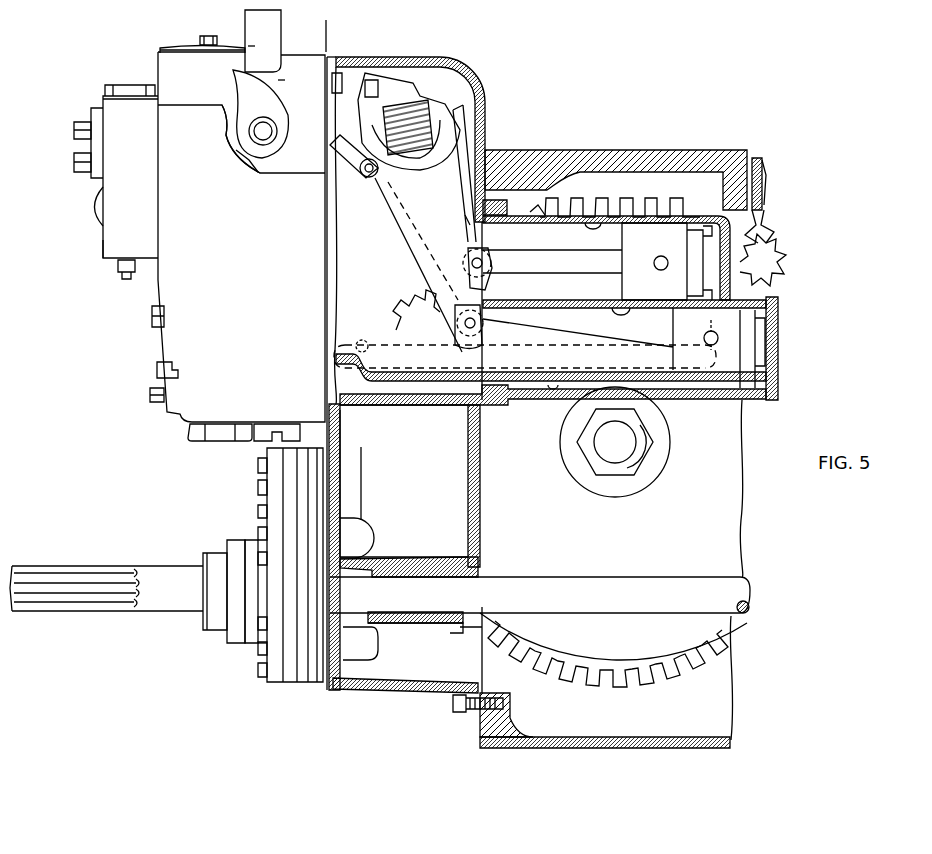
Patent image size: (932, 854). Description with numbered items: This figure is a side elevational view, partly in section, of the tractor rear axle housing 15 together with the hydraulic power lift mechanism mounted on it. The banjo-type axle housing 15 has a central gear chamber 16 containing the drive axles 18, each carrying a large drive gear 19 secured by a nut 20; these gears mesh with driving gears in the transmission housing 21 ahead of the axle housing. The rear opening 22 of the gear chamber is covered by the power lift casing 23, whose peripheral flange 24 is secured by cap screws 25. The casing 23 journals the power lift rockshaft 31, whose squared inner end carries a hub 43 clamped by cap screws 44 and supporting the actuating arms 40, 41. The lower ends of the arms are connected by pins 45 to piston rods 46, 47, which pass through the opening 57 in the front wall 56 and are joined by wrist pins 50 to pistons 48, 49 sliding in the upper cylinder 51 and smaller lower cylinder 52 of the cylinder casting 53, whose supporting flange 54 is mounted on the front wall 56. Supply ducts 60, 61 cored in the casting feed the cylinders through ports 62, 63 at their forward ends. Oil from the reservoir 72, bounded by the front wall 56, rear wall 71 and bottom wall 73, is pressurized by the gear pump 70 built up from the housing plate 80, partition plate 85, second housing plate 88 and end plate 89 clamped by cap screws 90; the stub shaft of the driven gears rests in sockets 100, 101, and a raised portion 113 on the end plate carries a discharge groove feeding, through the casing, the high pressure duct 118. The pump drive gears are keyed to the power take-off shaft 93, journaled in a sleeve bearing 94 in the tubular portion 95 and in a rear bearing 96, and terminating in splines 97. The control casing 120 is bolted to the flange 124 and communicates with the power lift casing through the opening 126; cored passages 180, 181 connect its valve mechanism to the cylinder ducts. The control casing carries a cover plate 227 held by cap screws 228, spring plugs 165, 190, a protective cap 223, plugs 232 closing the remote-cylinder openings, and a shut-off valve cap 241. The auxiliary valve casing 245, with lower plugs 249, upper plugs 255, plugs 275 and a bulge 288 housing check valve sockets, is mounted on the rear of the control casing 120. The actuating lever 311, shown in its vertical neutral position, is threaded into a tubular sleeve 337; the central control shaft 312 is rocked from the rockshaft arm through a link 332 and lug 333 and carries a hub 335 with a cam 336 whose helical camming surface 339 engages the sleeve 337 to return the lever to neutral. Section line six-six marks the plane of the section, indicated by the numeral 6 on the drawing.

The section line 6- 6 is at (297, 20).
The rear axle housing 15 is at (697, 142).
The gear chamber 16 is at (643, 736).
The drive axles 18 is at (628, 465).
The drive gear 19 is at (690, 676).
The nut 20 is at (640, 439).
The transmission housing 21 is at (757, 160).
The opening 22 is at (485, 677).
The power lift casing 23 is at (490, 515).
The flange 24 is at (476, 713).
The cap screws 25 is at (453, 707).
The power lift rockshaft 31 is at (470, 113).
The actuating arm 40 is at (484, 294).
The actuating arm 41 is at (418, 264).
The hub 43 is at (468, 134).
The cap screws 44 is at (378, 74).
The pins 45 is at (484, 258).
The piston rod 46 is at (540, 266).
The piston rod 47 is at (553, 324).
The piston 48 is at (665, 235).
The piston 49 is at (742, 323).
The wrist pins 50 is at (656, 268).
The cylinder 51 is at (590, 214).
The cylinder 52 is at (612, 303).
The cylinder casting 53 is at (766, 259).
The supporting flange 54 is at (507, 209).
The front wall 56 is at (480, 448).
The opening 57 is at (466, 222).
The supply duct 60 is at (527, 382).
The supply duct 61 is at (552, 393).
The port 62 is at (759, 263).
The port 63 is at (776, 389).
The pump 70 is at (272, 693).
The rear wall 71 is at (342, 501).
The reservoir 72 is at (424, 514).
The bottom wall 73 is at (400, 572).
The housing plate 80 is at (315, 683).
The partition plate 85 is at (305, 683).
The housing plate 88 is at (290, 683).
The end plate 89 is at (265, 646).
The cap screws 90 is at (257, 534).
The power take-off shaft 93 is at (528, 589).
The sleeve bearing 94 is at (398, 624).
The tubular portion 95 is at (436, 625).
The bearing 96 is at (208, 621).
The splines 97 is at (50, 587).
The socket 100 is at (366, 539).
The socket 101 is at (240, 533).
The raised portion 113 is at (252, 646).
The high pressure duct 118 is at (362, 463).
The control casing 120 is at (248, 250).
The flange 124 is at (348, 57).
The opening 126 is at (342, 93).
The plug 165 is at (198, 437).
The cored passage 180 is at (362, 339).
The cored passage 181 is at (422, 396).
The plug 190 is at (262, 437).
The threaded cap 223 is at (152, 322).
The cover plate 227 is at (180, 48).
The cap screws 228 is at (207, 36).
The plug 232 is at (150, 399).
The threaded cap 241 is at (157, 367).
The auxiliary valve casing 245 is at (95, 246).
The plugs 249 is at (122, 272).
The plugs 255 is at (125, 88).
The plugs 275 is at (74, 136).
The bulge 288 is at (90, 207).
The actuating lever 311 is at (270, 82).
The central control shaft 312 is at (266, 134).
The link 332 is at (345, 152).
The lug 333 is at (372, 178).
The hub 335 is at (258, 172).
The cam 336 is at (245, 97).
The tubular sleeve 337 is at (255, 48).
The camming surface 339 is at (280, 96).